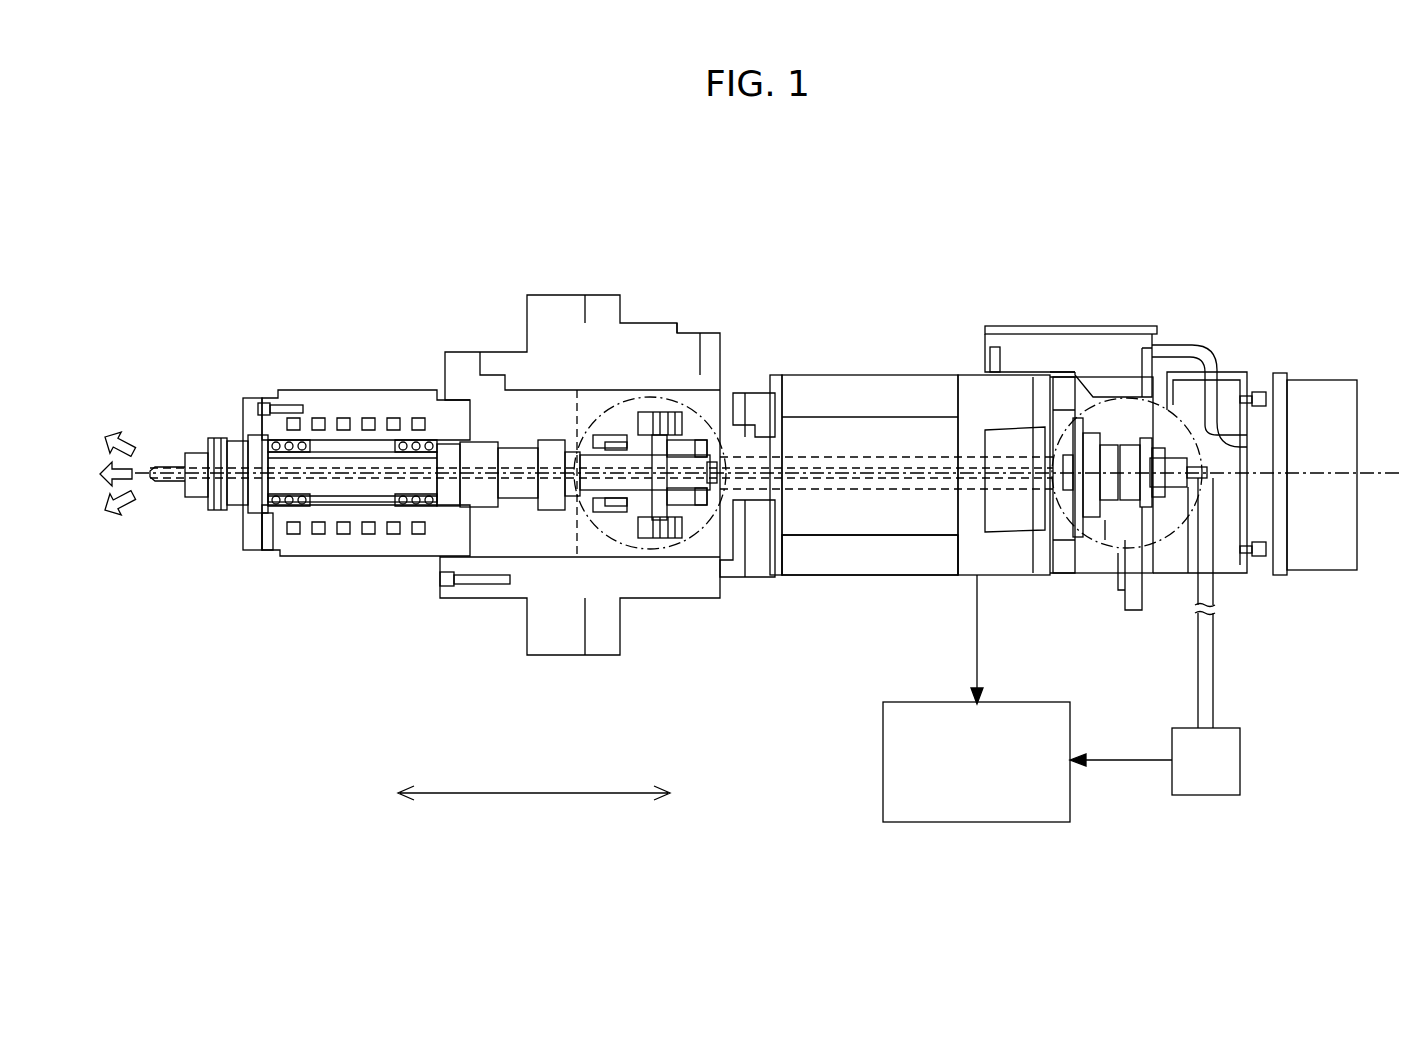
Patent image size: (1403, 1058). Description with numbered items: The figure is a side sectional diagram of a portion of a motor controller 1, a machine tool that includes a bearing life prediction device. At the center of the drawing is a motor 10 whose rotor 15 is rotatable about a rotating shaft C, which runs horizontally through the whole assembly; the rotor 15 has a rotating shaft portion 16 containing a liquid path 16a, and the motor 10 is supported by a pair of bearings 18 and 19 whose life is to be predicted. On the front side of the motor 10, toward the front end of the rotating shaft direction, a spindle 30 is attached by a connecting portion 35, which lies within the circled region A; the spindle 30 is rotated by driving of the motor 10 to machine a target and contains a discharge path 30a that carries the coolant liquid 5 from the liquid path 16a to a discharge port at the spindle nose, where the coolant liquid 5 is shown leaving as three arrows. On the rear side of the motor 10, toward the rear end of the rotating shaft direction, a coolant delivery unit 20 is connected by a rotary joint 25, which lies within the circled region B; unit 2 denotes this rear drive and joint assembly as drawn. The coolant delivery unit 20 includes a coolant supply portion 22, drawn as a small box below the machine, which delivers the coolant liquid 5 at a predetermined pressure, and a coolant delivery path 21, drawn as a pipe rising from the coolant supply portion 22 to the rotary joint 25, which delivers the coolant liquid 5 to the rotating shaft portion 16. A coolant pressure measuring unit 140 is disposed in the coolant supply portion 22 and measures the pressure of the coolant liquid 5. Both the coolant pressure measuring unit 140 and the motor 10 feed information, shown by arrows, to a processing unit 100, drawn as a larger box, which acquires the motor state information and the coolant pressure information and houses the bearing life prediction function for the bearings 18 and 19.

The motor controller 1 is at (1312, 186).
The rotary drive unit 2 is at (1242, 312).
The coolant liquid 5 is at (128, 440).
The motor 10 is at (812, 332).
The rotor 15 is at (866, 428).
The rotating shaft portion 16 is at (922, 452).
The liquid path 16a is at (918, 480).
The bearing 18 is at (812, 522).
The bearing 19 is at (1018, 522).
The coolant delivery unit 20 is at (1226, 592).
The coolant delivery path 21 is at (1210, 558).
The coolant supply portion 22 is at (1252, 740).
The rotary joint 25 is at (1170, 430).
The spindle 30 is at (335, 453).
The discharge path 30a is at (360, 485).
The connecting portion 35 is at (626, 430).
The processing unit 100 is at (1012, 824).
The coolant pressure measuring unit 140 is at (1234, 774).
The region A is at (628, 549).
The region B is at (1172, 537).
The rotating shaft C is at (1386, 467).